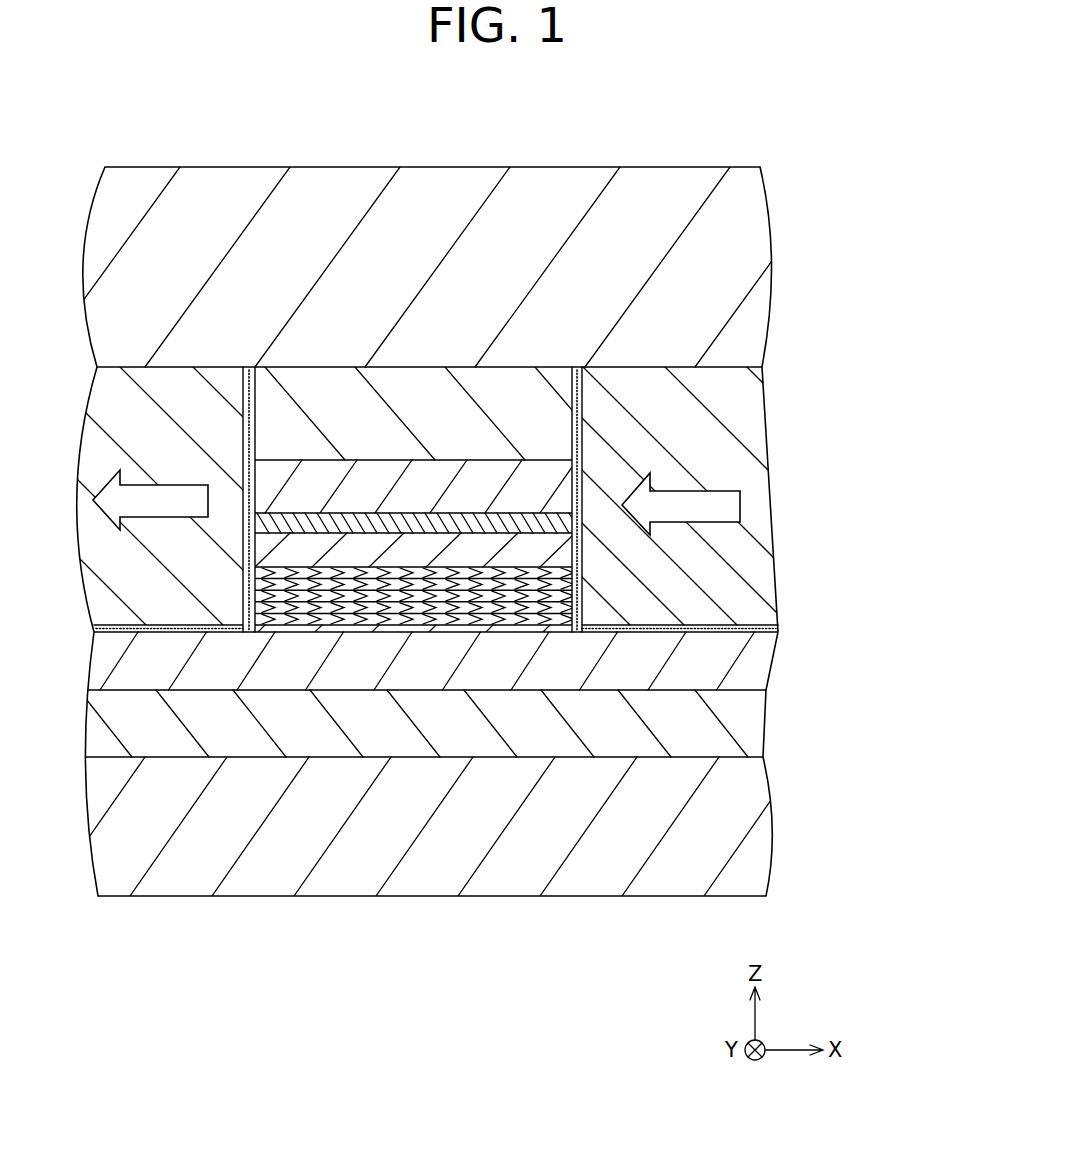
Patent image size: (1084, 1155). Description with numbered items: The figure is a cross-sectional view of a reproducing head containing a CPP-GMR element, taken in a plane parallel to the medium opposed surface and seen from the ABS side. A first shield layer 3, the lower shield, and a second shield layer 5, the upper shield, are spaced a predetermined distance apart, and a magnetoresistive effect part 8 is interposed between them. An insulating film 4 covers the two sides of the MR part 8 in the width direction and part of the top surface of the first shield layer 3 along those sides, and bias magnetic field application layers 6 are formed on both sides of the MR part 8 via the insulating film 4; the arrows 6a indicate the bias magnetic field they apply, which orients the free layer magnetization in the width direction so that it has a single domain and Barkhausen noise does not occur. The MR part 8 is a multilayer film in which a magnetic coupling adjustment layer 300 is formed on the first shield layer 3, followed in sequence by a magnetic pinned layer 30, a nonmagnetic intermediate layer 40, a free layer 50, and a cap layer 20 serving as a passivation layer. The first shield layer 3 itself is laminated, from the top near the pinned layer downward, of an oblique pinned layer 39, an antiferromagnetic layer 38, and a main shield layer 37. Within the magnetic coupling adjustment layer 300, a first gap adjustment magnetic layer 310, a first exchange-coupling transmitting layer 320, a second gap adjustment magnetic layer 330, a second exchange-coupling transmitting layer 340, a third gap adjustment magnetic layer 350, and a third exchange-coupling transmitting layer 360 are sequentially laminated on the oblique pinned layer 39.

The second shield layer 5 is at (655, 178).
The bias magnetic field application layer 6 is at (132, 412).
The arrows 6a is at (162, 508).
The insulating film 4 is at (243, 433).
The cap layer 20 is at (553, 410).
The free layer 50 is at (555, 490).
The nonmagnetic intermediate layer 40 is at (555, 520).
The magnetic pinned layer 30 is at (555, 552).
The third exchange-coupling transmitting layer 360 is at (555, 572).
The third gap adjustment magnetic layer 350 is at (555, 584).
The second exchange-coupling transmitting layer 340 is at (555, 596).
The second gap adjustment magnetic layer 330 is at (555, 608).
The first exchange-coupling transmitting layer 320 is at (555, 619).
The first gap adjustment magnetic layer 310 is at (565, 640).
The magnetic coupling adjustment layer 300 is at (851, 532).
The magnetoresistive effect part 8 is at (912, 380).
The oblique pinned layer 39 is at (755, 680).
The antiferromagnetic layer 38 is at (753, 730).
The main shield layer 37 is at (753, 807).
The first shield layer 3 is at (851, 705).